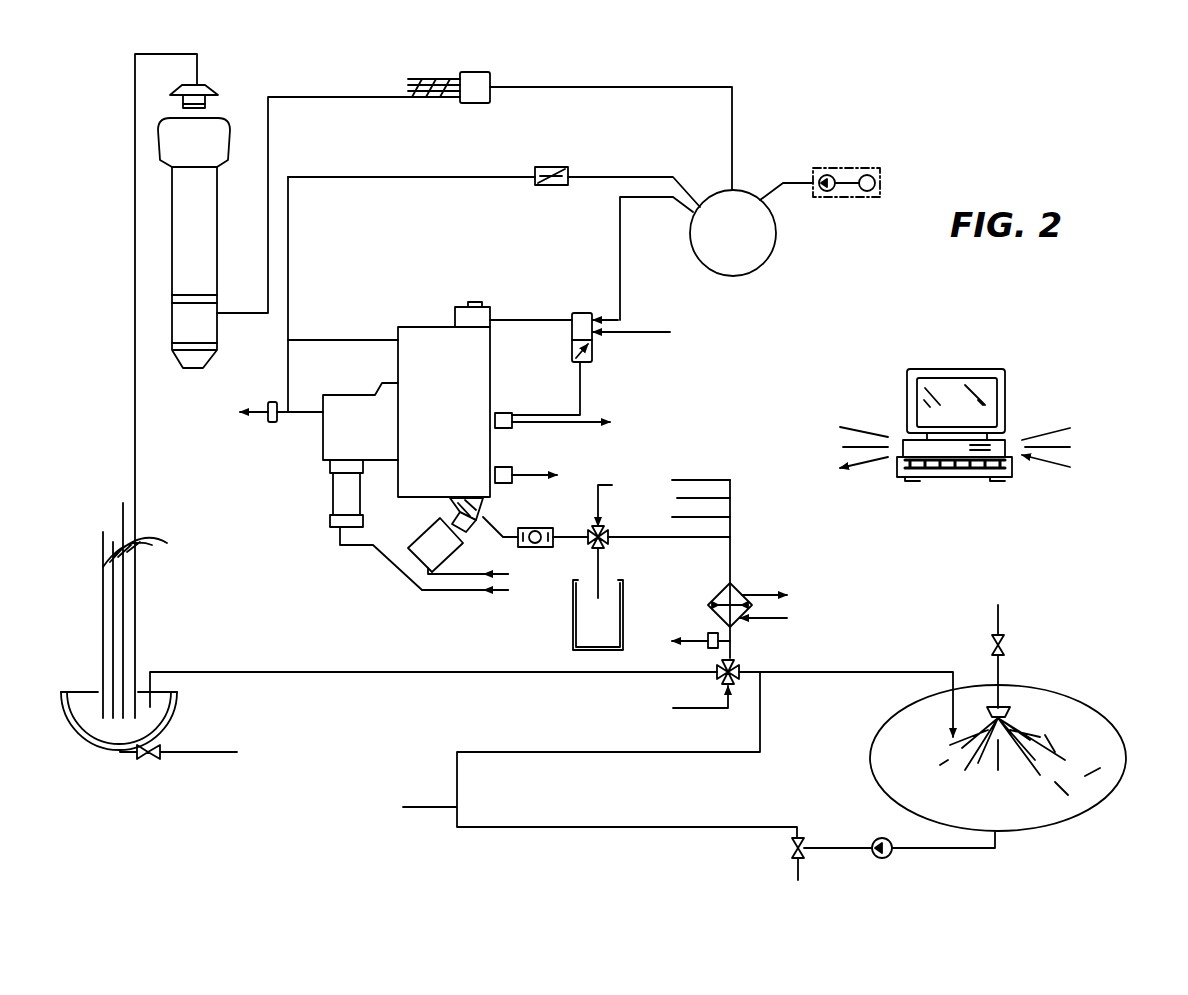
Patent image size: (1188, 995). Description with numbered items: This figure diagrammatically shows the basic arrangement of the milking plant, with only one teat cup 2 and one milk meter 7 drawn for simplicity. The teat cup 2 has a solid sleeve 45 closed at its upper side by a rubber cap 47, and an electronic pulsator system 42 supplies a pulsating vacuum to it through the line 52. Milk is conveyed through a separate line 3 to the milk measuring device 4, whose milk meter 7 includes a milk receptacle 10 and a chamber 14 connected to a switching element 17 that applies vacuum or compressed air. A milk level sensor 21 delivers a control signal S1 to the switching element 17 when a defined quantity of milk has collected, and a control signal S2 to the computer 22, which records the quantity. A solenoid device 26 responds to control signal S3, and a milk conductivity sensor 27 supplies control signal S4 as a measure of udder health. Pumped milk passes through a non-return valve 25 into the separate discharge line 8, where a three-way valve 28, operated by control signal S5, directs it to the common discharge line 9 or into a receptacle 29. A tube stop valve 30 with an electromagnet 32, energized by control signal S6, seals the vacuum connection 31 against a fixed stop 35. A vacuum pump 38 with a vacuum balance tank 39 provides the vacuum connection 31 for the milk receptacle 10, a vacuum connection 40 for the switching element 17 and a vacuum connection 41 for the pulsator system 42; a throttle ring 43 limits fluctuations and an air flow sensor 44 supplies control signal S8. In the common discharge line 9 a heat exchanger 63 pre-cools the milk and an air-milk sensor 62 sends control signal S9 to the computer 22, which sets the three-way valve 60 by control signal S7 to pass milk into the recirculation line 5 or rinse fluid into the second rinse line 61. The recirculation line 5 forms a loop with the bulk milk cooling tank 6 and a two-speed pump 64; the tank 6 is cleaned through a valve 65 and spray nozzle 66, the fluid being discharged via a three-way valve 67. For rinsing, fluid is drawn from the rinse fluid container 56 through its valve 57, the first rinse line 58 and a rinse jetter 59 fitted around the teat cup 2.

The teat cup 2 is at (200, 275).
The separate line 3 is at (345, 340).
The milk measuring device 4 is at (478, 352).
The milk recirculation line 5 is at (637, 753).
The bulk milk cooling tank 6 is at (883, 728).
The milk meter 7 is at (416, 503).
The separate discharge line 8 is at (692, 496).
The common discharge line 9 is at (732, 560).
The milk receptacle 10 is at (398, 446).
The chamber 14 is at (455, 307).
The switching element 17 is at (590, 300).
The milk level sensor 21 is at (507, 413).
The computer 22 is at (985, 338).
The non-return valve 25 is at (550, 528).
The solenoid device 26 is at (437, 543).
The milk conductivity sensor 27 is at (508, 467).
The three-way valve 28 is at (600, 550).
The receptacle 29 is at (573, 625).
The tube stop valve 30 is at (340, 437).
The vacuum connection 31 is at (288, 258).
The electromagnet 32 is at (330, 500).
The fixed stop 35 is at (343, 395).
The vacuum pump 38 is at (850, 170).
The vacuum balance tank 39 is at (768, 245).
The vacuum connection 40 is at (620, 262).
The vacuum connection 41 is at (692, 87).
The electronic pulsator system 42 is at (472, 103).
The throttle ring 43 is at (545, 167).
The air flow sensor 44 is at (272, 422).
The sleeve 45 is at (200, 236).
The rubber cap 47 is at (222, 136).
The line 52 is at (372, 97).
The rinse fluid container 56 is at (178, 706).
The valve 57 is at (148, 760).
The first rinse line 58 is at (135, 527).
The rinse jetter 59 is at (206, 86).
The three-way valve 60 is at (740, 682).
The second rinse line 61 is at (330, 672).
The air-milk sensor 62 is at (708, 633).
The heat exchanger 63 is at (738, 622).
The pump 64 is at (882, 838).
The valve 65 is at (1005, 645).
The spray nozzle 66 is at (1010, 706).
The three-way valve 67 is at (790, 845).
The control signal S1 is at (580, 387).
The control signal S2 is at (580, 423).
The control signal S3 is at (483, 573).
The control signal S4 is at (549, 477).
The control signal S5 is at (620, 500).
The control signal S6 is at (439, 566).
The control signal S7 is at (681, 703).
The control signal S8 is at (232, 413).
The control signal S9 is at (668, 645).